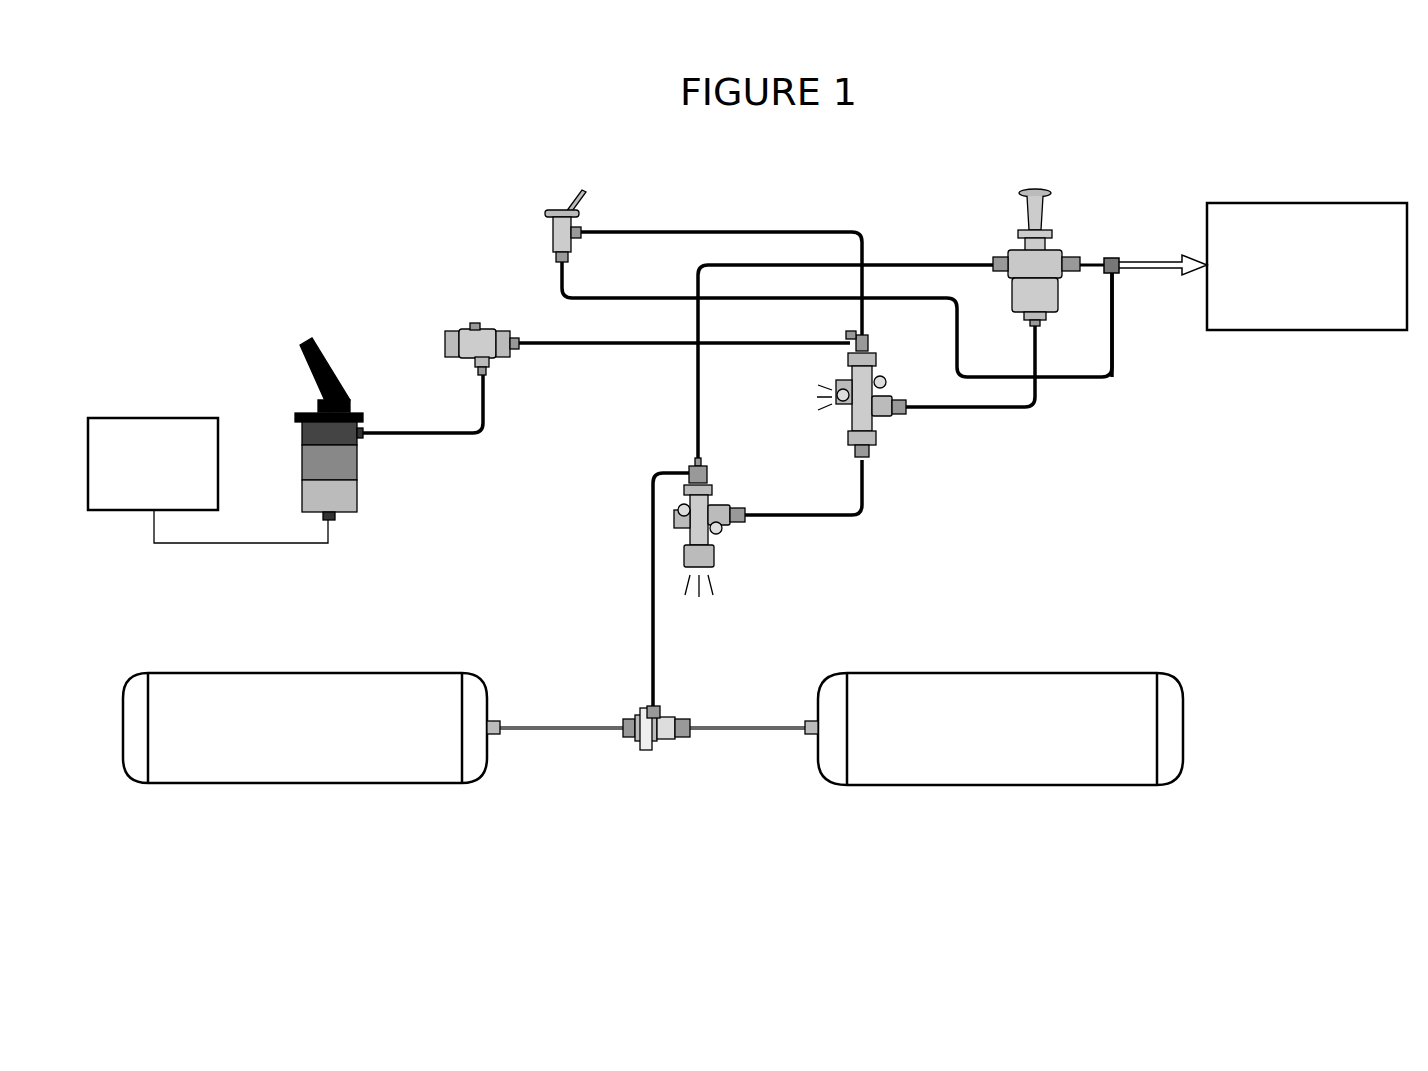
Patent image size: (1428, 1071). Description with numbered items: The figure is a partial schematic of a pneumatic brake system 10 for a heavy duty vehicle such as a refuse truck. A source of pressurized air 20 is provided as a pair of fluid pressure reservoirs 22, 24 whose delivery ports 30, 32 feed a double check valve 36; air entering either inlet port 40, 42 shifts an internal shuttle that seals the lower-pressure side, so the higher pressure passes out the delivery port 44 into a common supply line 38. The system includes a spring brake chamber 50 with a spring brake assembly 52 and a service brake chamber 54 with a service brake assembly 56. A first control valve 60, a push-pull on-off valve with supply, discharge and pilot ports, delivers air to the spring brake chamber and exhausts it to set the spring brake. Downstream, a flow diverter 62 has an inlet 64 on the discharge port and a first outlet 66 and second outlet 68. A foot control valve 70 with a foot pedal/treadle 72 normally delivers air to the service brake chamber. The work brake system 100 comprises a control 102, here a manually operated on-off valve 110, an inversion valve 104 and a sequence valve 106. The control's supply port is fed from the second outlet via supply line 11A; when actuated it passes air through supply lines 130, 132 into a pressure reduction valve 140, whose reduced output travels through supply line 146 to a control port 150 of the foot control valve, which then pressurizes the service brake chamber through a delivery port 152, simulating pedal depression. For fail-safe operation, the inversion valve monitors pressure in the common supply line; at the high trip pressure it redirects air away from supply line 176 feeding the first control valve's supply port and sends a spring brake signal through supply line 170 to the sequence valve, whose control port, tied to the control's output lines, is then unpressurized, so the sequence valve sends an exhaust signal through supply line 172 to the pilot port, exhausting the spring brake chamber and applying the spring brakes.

The pneumatic brake system 10 is at (285, 222).
The source of pressurized air 20 is at (653, 791).
The fluid pressure reservoir 22 is at (283, 785).
The fluid pressure reservoir 24 is at (975, 785).
The delivery port 30 is at (498, 712).
The delivery port 32 is at (805, 715).
The double check valve 36 is at (669, 757).
The common supply line 38 is at (655, 640).
The inlet port 40 is at (625, 735).
The inlet port 42 is at (692, 740).
The delivery port 44 is at (660, 712).
The spring brake chamber 50 is at (1307, 228).
The spring brake assembly 52 is at (1307, 266).
The service brake chamber 54 is at (153, 410).
The service brake assembly 56 is at (138, 398).
The first control valve 60 is at (1045, 170).
The flow diverter 62 is at (1128, 238).
The inlet 64 is at (1105, 258).
The first outlet 66 is at (1118, 270).
The second outlet 68 is at (1118, 274).
The foot control valve 70 is at (356, 406).
The foot pedal/treadle 72 is at (330, 368).
The work brake system 100 is at (605, 440).
The control 102 is at (550, 160).
The inversion valve 104 is at (740, 558).
The sequence valve 106 is at (910, 455).
The manually operated on-off valve 110 is at (545, 205).
The supply line 11A is at (622, 298).
The supply line 130 is at (720, 230).
The supply line 132 is at (617, 348).
The pressure reduction valve 140 is at (455, 314).
The supply line 146 is at (480, 438).
The control port 150 is at (363, 435).
The delivery port 152 is at (340, 520).
The supply line 170 is at (850, 518).
The supply line 172 is at (1002, 410).
The supply line 176 is at (704, 400).